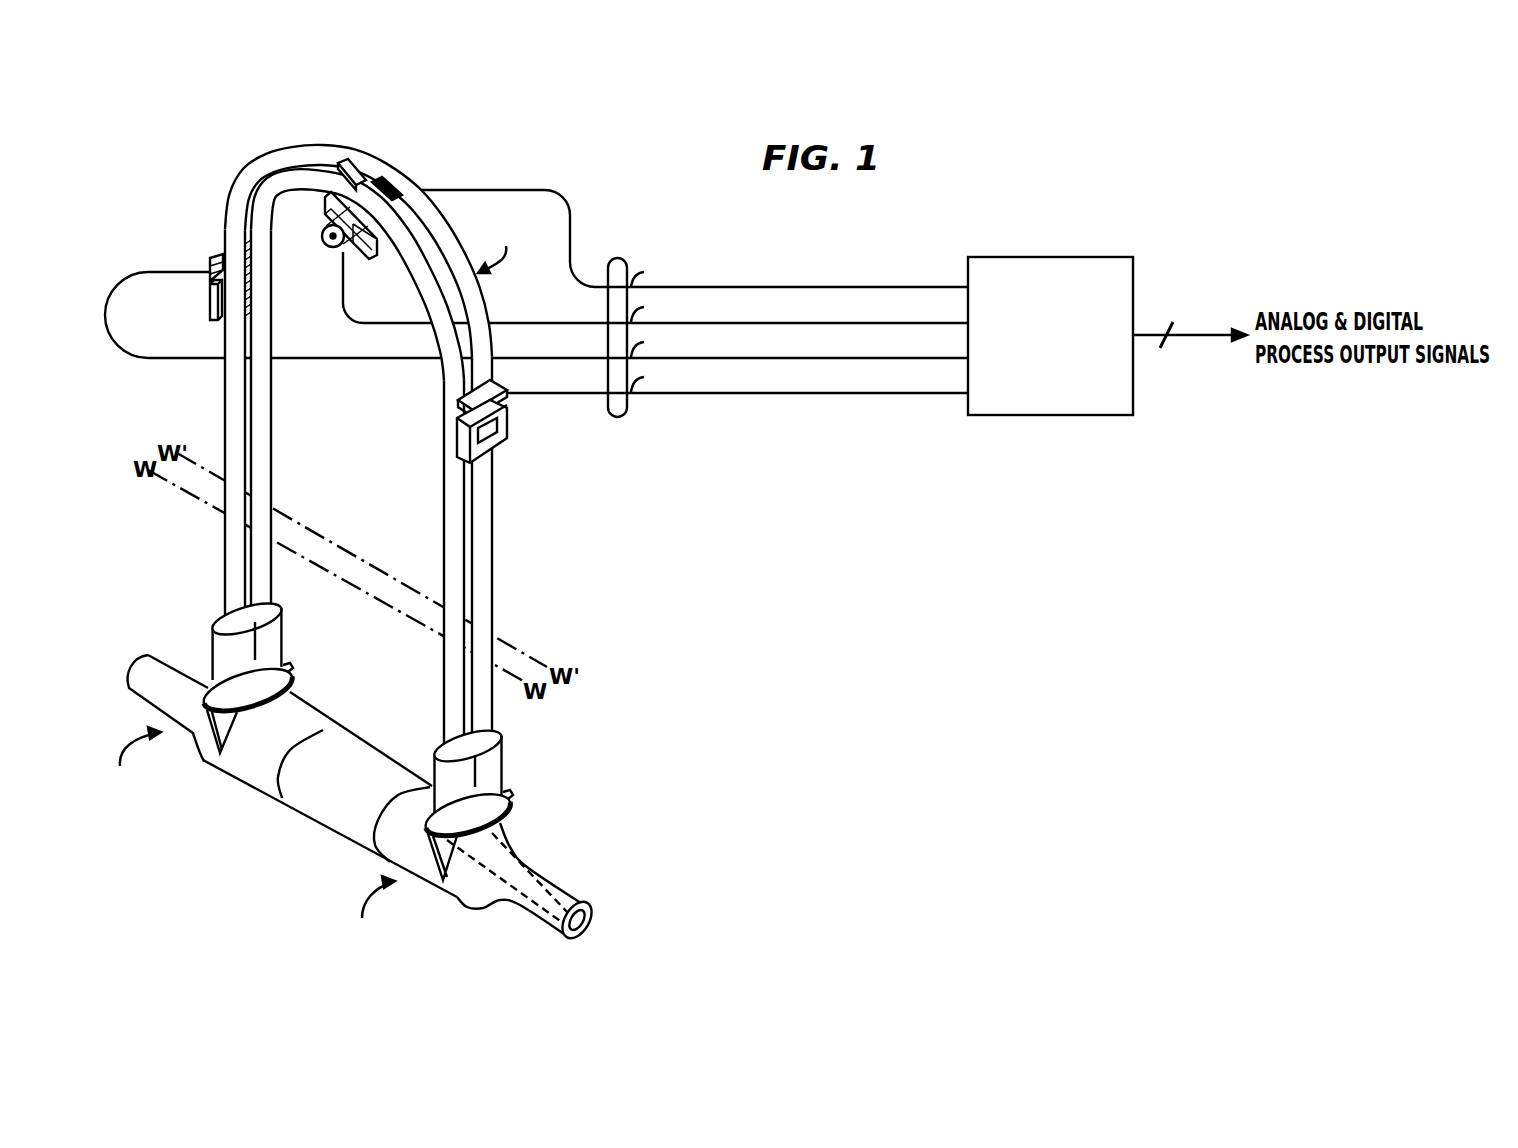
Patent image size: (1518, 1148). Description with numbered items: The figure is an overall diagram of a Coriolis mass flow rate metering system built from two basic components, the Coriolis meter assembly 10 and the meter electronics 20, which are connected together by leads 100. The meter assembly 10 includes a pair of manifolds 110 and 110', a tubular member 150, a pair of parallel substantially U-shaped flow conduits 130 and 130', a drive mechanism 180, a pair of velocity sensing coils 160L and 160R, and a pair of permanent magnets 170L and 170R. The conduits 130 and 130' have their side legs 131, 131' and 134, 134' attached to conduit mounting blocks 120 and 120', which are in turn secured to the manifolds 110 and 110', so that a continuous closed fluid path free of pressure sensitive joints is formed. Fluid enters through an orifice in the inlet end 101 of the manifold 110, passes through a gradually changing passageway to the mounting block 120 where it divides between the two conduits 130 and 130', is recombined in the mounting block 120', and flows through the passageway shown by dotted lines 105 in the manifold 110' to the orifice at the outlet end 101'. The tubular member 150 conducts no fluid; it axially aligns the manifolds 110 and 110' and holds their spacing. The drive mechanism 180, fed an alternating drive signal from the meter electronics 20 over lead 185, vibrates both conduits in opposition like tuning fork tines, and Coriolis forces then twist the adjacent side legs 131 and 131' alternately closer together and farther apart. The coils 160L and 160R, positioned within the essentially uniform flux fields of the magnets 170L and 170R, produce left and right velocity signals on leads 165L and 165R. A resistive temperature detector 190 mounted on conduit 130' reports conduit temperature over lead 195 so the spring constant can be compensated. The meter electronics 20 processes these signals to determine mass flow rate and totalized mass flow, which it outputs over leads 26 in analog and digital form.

The Coriolis meter assembly 10 is at (515, 240).
The meter electronics 20 is at (1112, 257).
The leads 26 is at (1203, 330).
The leads 100 is at (628, 260).
The inlet end 101 is at (146, 705).
The outlet end 101' is at (598, 913).
The dotted lines 105 is at (532, 878).
The manifold 110 is at (133, 760).
The manifold 110' is at (369, 911).
The conduit mounting block 120 is at (269, 675).
The conduit mounting block 120' is at (498, 794).
The flow conduit 130 is at (341, 445).
The flow conduit 130' is at (354, 423).
The side leg 131 is at (205, 430).
The side leg 131' is at (293, 423).
The side leg 134 is at (423, 563).
The side leg 134' is at (515, 555).
The tubular member 150 is at (328, 808).
The velocity sensing coil 160L is at (210, 263).
The velocity sensing coil 160R is at (457, 403).
The lead 165L is at (932, 360).
The lead 165R is at (858, 395).
The permanent magnet 170L is at (209, 298).
The permanent magnet 170R is at (508, 434).
The drive mechanism 180 is at (341, 248).
The lead 185 is at (933, 321).
The resistive temperature detector (RTD) 190 is at (405, 186).
The lead 195 is at (863, 286).